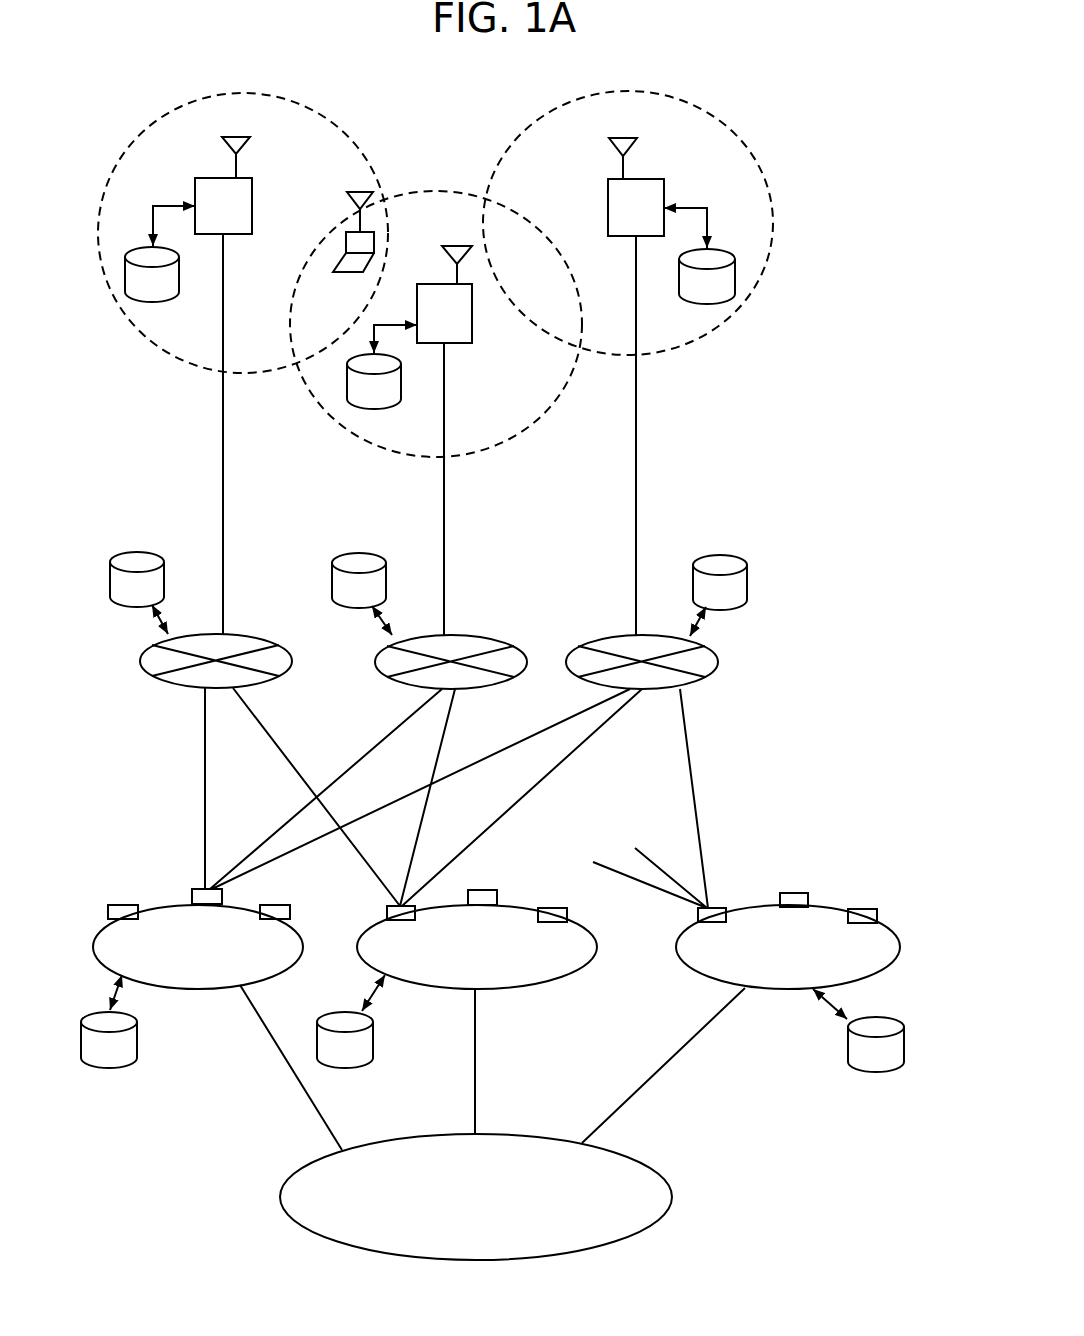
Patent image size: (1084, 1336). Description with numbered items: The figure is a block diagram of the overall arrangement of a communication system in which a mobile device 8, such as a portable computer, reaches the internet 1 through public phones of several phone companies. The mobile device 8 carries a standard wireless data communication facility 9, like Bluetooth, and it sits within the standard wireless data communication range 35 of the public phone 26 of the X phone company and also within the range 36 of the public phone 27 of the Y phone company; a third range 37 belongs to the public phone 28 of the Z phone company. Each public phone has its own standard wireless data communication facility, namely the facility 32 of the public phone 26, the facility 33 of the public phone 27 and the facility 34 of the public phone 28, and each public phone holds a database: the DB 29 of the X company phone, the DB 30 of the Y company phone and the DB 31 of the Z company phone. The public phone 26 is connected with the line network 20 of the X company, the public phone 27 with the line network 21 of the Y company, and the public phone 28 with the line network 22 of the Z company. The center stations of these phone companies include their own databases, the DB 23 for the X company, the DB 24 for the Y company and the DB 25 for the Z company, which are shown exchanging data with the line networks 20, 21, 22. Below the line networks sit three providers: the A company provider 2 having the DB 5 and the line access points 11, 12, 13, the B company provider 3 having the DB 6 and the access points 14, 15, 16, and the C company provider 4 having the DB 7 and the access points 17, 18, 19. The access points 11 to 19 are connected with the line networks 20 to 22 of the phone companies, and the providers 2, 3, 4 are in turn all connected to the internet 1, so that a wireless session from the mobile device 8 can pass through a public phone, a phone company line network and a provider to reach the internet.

The internet 1 is at (655, 1165).
The provider of an A company 2 is at (103, 963).
The provider of a B company 3 is at (565, 975).
The provider of a C company 4 is at (900, 955).
The database of a provider 5 is at (137, 1040).
The database of a provider 6 is at (373, 1040).
The database of a provider 7 is at (904, 1045).
The mobile device 8 is at (345, 272).
The standard wireless data communication facility 9 is at (347, 192).
The line access point of the provider 11 is at (110, 905).
The line access point of the provider 12 is at (192, 893).
The line access point of the provider 13 is at (276, 905).
The line access point of the provider 14 is at (387, 910).
The line access point of the provider 15 is at (483, 890).
The line access point of the provider 16 is at (553, 908).
The line access point of the provider 17 is at (698, 915).
The line access point of the provider 18 is at (795, 893).
The line access point of the provider 19 is at (865, 909).
The line network of the phone company 20 is at (140, 670).
The line network of the phone company 21 is at (480, 637).
The line network of the phone company 22 is at (717, 672).
The database of the center station of the phone company 23 is at (122, 553).
The database of the center station of the phone company 24 is at (345, 553).
The database of the center station of the phone company 25 is at (731, 556).
The public phone of the phone company 26 is at (252, 206).
The public phone of the phone company 27 is at (472, 330).
The public phone of the phone company 28 is at (664, 193).
The database of the public phone 29 is at (125, 290).
The database of the public phone 30 is at (347, 396).
The database of the public phone 31 is at (735, 292).
The standard wireless data communication facility 32 is at (221, 143).
The standard wireless data communication facility 33 is at (445, 248).
The standard wireless data communication facility 34 is at (637, 148).
The standard wireless data communication range of the public phone 35 is at (133, 136).
The standard wireless data communication range of the public phone 36 is at (540, 418).
The standard wireless data communication range of the public phone 37 is at (730, 126).